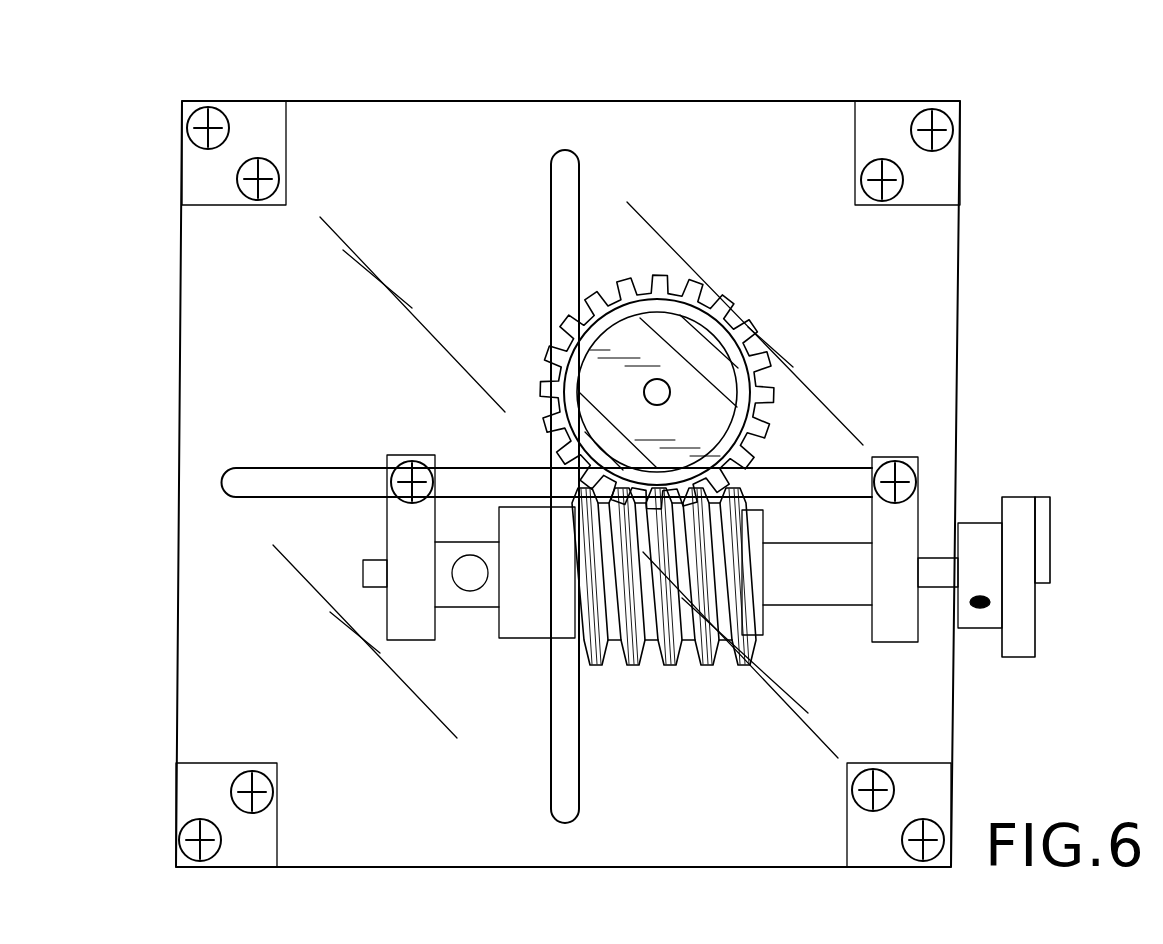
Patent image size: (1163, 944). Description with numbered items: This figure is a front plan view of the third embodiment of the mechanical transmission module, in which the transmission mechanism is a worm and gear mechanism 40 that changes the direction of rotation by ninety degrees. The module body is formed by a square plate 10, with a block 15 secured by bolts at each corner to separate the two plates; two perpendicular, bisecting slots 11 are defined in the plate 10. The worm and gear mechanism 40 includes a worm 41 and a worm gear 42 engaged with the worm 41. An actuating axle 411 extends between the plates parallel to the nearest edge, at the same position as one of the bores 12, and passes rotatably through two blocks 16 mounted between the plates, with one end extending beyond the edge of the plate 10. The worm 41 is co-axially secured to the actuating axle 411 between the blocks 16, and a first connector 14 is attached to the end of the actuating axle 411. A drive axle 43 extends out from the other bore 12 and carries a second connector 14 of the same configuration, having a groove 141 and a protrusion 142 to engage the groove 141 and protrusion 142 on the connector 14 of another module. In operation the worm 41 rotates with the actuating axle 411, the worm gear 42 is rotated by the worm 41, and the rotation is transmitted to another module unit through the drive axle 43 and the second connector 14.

The plate 10 is at (945, 289).
The slot 11 is at (830, 475).
The bore 12 is at (472, 592).
The connector 14 is at (717, 413).
The groove 141 is at (703, 353).
The protrusion 142 is at (1050, 537).
The block 15 is at (948, 183).
The block 16 is at (893, 642).
The worm and gear mechanism 40 is at (676, 198).
The worm 41 is at (697, 667).
The actuating axle 411 is at (935, 565).
The worm gear 42 is at (686, 280).
The drive axle 43 is at (657, 390).